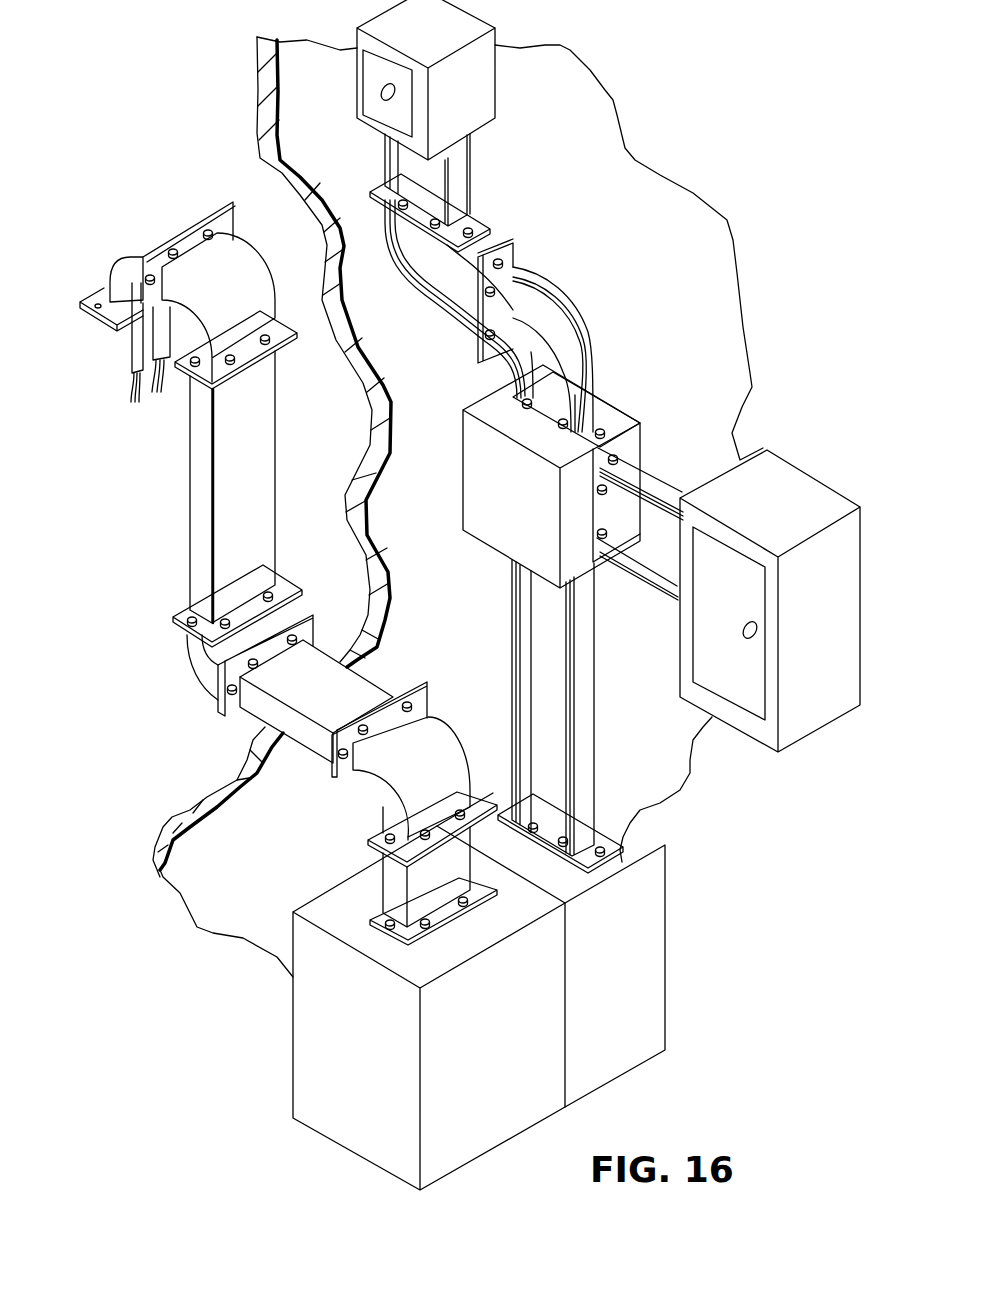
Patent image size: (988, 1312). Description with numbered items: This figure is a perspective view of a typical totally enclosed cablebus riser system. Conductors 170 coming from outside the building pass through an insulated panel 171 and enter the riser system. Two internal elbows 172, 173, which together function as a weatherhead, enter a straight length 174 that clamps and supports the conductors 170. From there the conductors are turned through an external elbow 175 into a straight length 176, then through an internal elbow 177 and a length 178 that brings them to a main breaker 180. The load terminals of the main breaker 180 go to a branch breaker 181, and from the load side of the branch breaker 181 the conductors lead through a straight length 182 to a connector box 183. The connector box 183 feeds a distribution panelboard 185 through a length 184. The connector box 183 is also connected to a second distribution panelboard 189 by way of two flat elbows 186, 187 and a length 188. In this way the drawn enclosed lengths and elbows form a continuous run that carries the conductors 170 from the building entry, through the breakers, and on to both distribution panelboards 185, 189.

The conductors 170 is at (140, 355).
The insulated panel 171 is at (112, 307).
The internal elbow 172 is at (160, 240).
The internal elbow 173 is at (230, 272).
The straight length 174 is at (247, 425).
The external elbow 175 is at (195, 665).
The straight length 176 is at (322, 692).
The internal elbow 177 is at (433, 760).
The length 178 is at (396, 888).
The main breaker 180 is at (332, 1037).
The branch breaker 181 is at (637, 906).
The straight length 182 is at (558, 632).
The connector box 183 is at (487, 473).
The length 184 is at (648, 528).
The distribution panelboard 185 is at (758, 728).
The flat elbow 186 is at (552, 350).
The flat elbow 187 is at (445, 312).
The length 188 is at (395, 165).
The distribution panelboard 189 is at (485, 84).